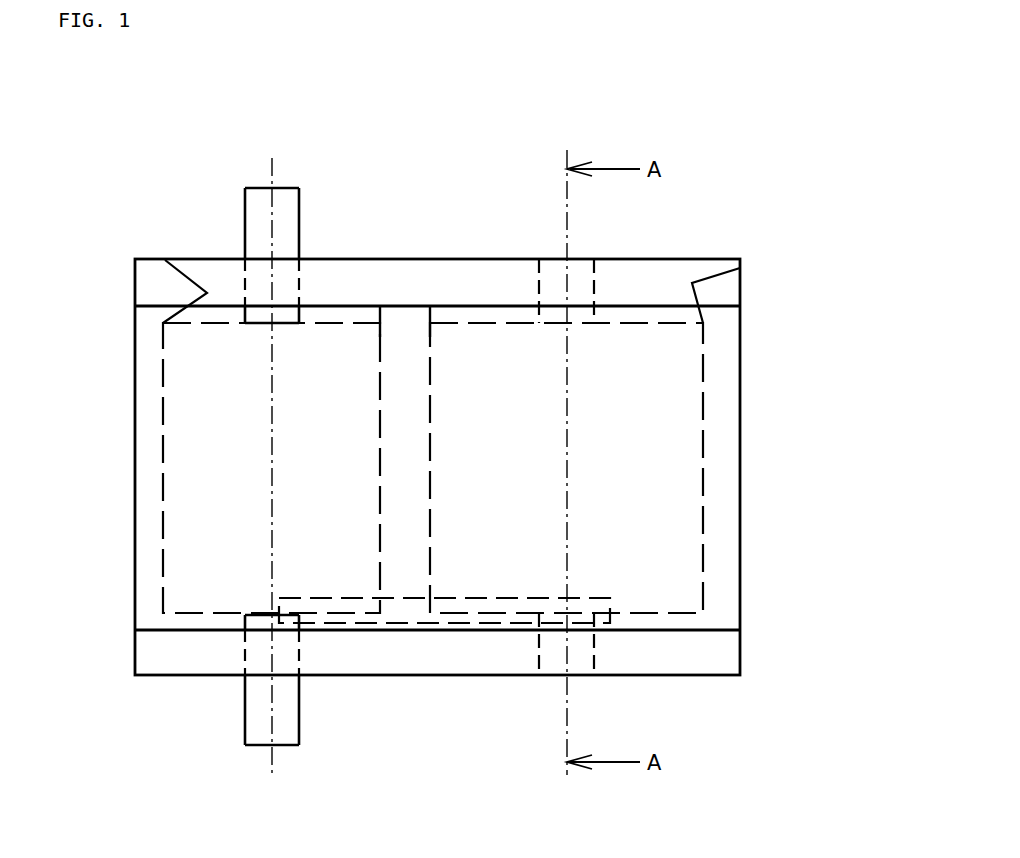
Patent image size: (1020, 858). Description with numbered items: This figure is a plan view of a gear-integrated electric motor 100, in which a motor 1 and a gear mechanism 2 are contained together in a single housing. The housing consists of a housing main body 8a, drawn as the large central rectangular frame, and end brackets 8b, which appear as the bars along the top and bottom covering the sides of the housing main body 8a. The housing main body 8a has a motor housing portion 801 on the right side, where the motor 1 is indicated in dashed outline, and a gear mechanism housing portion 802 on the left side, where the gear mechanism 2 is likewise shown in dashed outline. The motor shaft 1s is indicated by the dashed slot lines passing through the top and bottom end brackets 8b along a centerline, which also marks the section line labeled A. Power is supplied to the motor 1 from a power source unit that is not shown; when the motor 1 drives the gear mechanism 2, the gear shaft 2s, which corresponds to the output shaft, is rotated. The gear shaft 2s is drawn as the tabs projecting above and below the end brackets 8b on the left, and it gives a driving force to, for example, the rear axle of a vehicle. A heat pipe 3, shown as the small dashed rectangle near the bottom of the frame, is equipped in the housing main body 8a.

The gear-integrated electric motor 100 is at (483, 103).
The housing main body 8a is at (740, 535).
The end brackets 8b is at (350, 275).
The gear shaft 2s is at (253, 211).
The motor shaft 1s is at (595, 275).
The gear mechanism 2 is at (190, 450).
The motor 1 is at (676, 450).
The heat pipe 3 is at (462, 625).
The gear mechanism housing portion 802 is at (165, 260).
The motor housing portion 801 is at (740, 268).